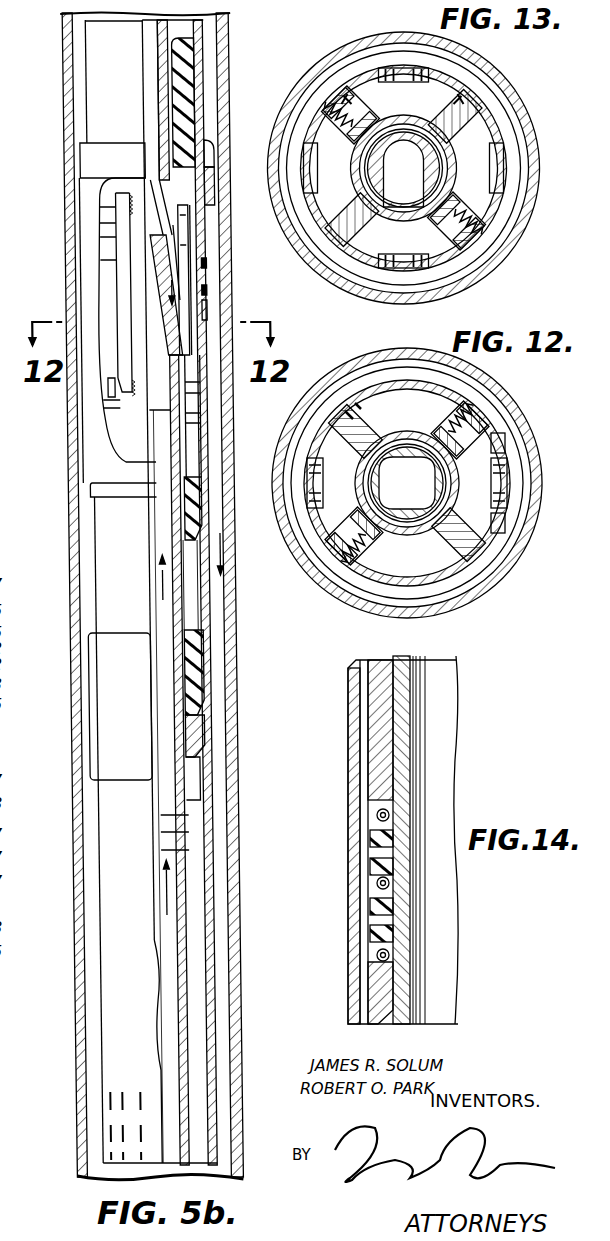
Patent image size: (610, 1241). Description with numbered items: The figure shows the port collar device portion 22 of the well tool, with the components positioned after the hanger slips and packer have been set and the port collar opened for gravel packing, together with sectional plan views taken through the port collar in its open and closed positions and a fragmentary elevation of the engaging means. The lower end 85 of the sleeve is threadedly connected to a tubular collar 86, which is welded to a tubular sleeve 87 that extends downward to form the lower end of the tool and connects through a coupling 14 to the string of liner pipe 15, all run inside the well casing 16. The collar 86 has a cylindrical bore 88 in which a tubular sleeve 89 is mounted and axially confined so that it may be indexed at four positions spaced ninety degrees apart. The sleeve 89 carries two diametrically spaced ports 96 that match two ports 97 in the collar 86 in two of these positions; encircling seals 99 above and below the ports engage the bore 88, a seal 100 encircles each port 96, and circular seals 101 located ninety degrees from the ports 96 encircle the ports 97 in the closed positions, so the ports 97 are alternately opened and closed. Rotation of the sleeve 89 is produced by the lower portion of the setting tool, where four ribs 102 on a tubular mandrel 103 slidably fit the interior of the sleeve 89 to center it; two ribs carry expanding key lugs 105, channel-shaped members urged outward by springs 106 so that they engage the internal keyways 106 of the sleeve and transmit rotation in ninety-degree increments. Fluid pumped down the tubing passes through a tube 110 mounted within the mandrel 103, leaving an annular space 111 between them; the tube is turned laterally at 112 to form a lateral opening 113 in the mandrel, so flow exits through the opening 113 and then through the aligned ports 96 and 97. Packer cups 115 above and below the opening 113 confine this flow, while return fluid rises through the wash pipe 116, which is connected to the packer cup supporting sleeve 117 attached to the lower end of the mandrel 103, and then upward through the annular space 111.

In FIG. 5B, the coupling 14 is at (208, 726).
In FIG. 5B, the liner pipe 15 is at (204, 884).
In FIG. 5B, the well casing 16 is at (68, 1096).
In FIG. 13, the well casing 16 is at (404, 168).
In FIG. 12, the well casing 16 is at (407, 483).
In FIG. 5B, the port collar device portion 22 is at (100, 463).
In FIG. 5B, the lower end of sleeve 85 is at (204, 160).
In FIG. 5B, the tubular collar 86 is at (207, 193).
In FIG. 13, the tubular collar 86 is at (404, 188).
In FIG. 12, the tubular collar 86 is at (407, 509).
In FIG. 5B, the tubular sleeve 87 is at (205, 555).
In FIG. 5B, the cylindrical bore 88 is at (204, 268).
In FIG. 5B, the tubular sleeve 89 is at (204, 290).
In FIG. 13, the tubular sleeve 89 is at (329, 225).
In FIG. 12, the tubular sleeve 89 is at (523, 533).
In FIG. 5B, the ports 96 is at (200, 330).
In FIG. 13, the ports 96 is at (404, 45).
In FIG. 12, the ports 96 is at (407, 483).
In FIG. 5B, the ports 97 is at (196, 318).
In FIG. 13, the ports 97 is at (523, 154).
In FIG. 12, the ports 97 is at (525, 425).
In FIG. 5B, the encircling seals 99 is at (205, 256).
In FIG. 13, the seal 100 is at (347, 58).
In FIG. 12, the seal 100 is at (320, 401).
In FIG. 13, the circular seals 101 is at (503, 93).
In FIG. 12, the circular seals 101 is at (358, 370).
In FIG. 5B, the ribs 102 is at (186, 222).
In FIG. 13, the ribs 102 is at (403, 168).
In FIG. 12, the ribs 102 is at (407, 522).
In FIG. 14, the ribs 102 is at (384, 768).
In FIG. 5B, the tubular mandrel 103 is at (175, 400).
In FIG. 13, the tubular mandrel 103 is at (404, 168).
In FIG. 12, the tubular mandrel 103 is at (407, 483).
In FIG. 14, the tubular mandrel 103 is at (400, 703).
In FIG. 13, the expanding key lugs 105 is at (379, 156).
In FIG. 12, the expanding key lugs 105 is at (406, 444).
In FIG. 14, the expanding key lugs 105 is at (368, 833).
In FIG. 13, the springs 106 is at (427, 188).
In FIG. 12, the springs 106 is at (440, 469).
In FIG. 14, the springs 106 is at (368, 868).
In FIG. 5B, the tube 110 is at (158, 100).
In FIG. 13, the tube 110 is at (388, 168).
In FIG. 12, the tube 110 is at (407, 494).
In FIG. 5B, the annular space 111 is at (168, 58).
In FIG. 5B, the lateral turn of tube 112 is at (140, 176).
In FIG. 5B, the lateral opening 113 is at (170, 255).
In FIG. 13, the lateral opening 113 is at (404, 169).
In FIG. 12, the lateral opening 113 is at (407, 483).
In FIG. 5B, the packer cups 115 is at (200, 512).
In FIG. 5B, the wash pipe 116 is at (178, 951).
In FIG. 5B, the packer cup supporting sleeve 117 is at (180, 736).